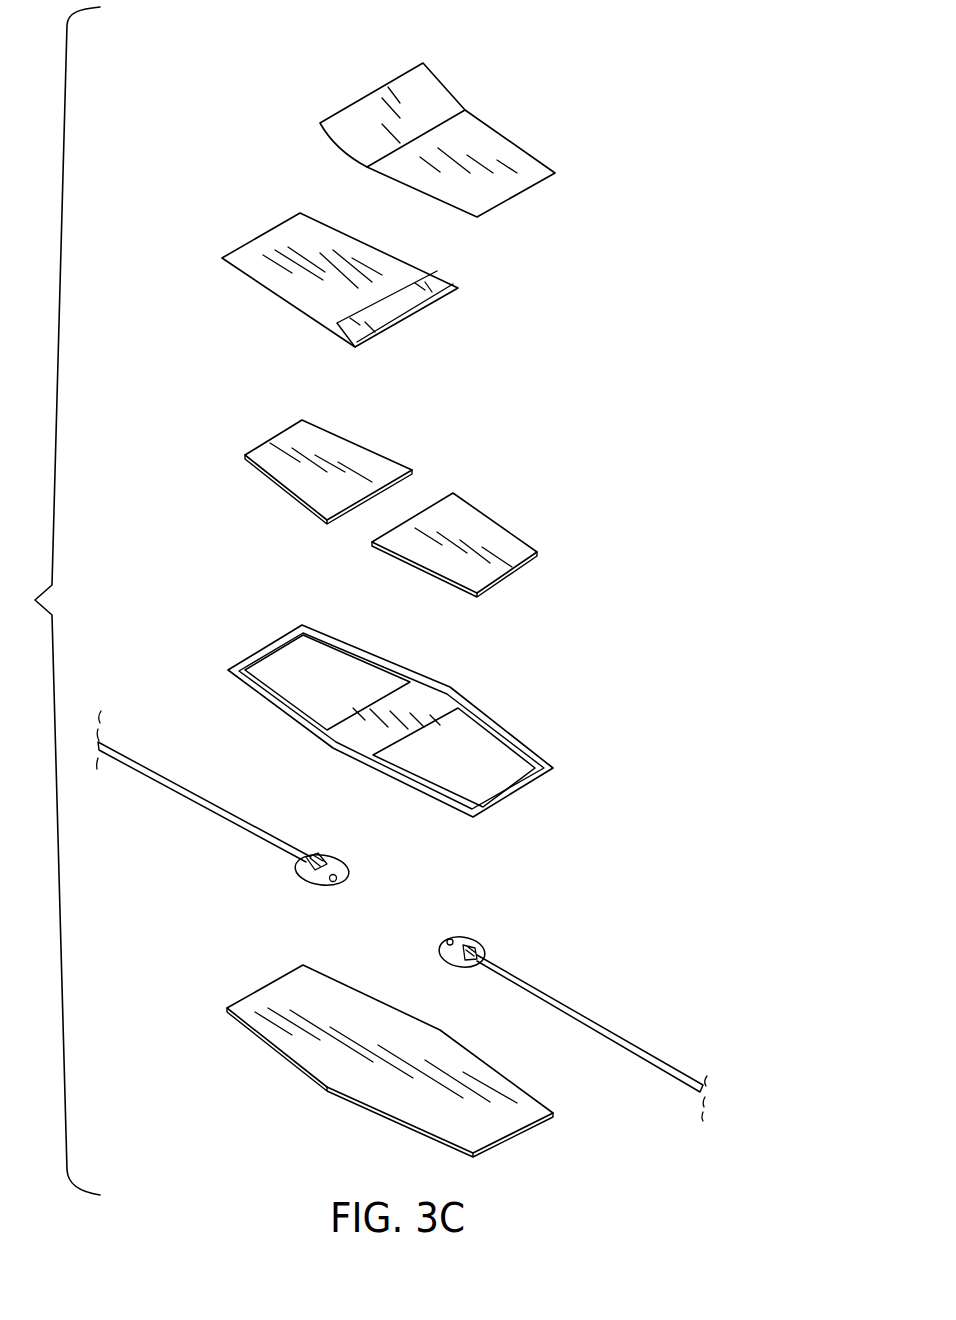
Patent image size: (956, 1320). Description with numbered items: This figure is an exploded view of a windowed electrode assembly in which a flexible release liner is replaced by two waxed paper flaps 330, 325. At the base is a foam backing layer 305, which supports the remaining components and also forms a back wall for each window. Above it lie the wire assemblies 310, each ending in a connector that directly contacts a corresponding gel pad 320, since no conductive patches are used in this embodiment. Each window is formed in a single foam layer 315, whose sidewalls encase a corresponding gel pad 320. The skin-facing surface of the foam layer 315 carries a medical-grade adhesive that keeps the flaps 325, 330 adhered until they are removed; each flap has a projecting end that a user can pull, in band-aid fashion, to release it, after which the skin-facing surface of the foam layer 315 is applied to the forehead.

The foam backing layer 305 is at (512, 1122).
The wire assemblies 310 is at (665, 1063).
The foam layer 315 is at (545, 770).
The gel pad 320 is at (497, 553).
The waxed paper flap 325 is at (438, 282).
The waxed paper flap 330 is at (555, 173).